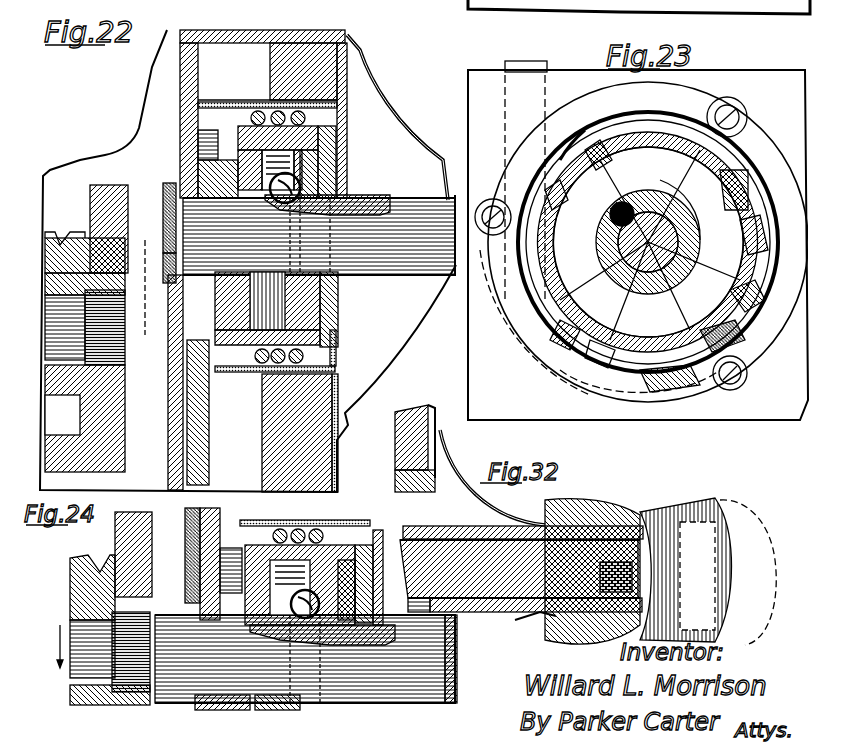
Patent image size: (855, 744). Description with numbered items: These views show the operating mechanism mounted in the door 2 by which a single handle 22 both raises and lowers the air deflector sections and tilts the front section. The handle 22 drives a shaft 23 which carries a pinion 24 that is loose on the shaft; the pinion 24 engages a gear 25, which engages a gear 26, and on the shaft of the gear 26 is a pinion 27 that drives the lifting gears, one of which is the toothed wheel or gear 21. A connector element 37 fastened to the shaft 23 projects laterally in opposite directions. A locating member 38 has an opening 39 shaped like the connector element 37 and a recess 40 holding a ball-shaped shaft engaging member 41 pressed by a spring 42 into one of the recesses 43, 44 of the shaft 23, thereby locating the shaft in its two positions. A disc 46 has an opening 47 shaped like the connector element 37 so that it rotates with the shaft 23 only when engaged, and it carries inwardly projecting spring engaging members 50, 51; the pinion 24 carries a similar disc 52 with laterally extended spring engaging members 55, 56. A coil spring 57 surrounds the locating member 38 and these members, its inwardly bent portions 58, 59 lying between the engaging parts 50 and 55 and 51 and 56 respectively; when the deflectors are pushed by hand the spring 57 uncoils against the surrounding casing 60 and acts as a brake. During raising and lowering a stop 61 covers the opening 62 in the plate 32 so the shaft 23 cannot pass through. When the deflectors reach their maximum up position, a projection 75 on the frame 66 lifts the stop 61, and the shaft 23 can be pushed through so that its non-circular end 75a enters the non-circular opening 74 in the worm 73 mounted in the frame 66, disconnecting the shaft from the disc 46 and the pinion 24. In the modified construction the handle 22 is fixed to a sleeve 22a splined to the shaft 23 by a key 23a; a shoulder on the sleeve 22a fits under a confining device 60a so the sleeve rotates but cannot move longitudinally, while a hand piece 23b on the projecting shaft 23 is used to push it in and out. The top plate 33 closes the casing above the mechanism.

In FIG. 22, the door 2 is at (337, 463).
In FIG. 22, the toothed wheel or gear 21 is at (217, 6).
In FIG. 23, the handle 22 is at (500, 116).
In FIG. 32, the handle 22 is at (572, 512).
In FIG. 32, the sleeve 22a is at (518, 526).
In FIG. 22, the shaft 23 is at (225, 74).
In FIG. 23, the shaft 23 is at (648, 242).
In FIG. 24, the shaft 23 is at (443, 635).
In FIG. 32, the shaft 23 is at (470, 611).
In FIG. 32, the spline or key 23a is at (483, 540).
In FIG. 32, the hand piece 23b is at (728, 578).
In FIG. 22, the pinion 24 is at (205, 170).
In FIG. 23, the pinion 24 is at (755, 165).
In FIG. 24, the pinion 24 is at (262, 512).
In FIG. 22, the gear 25 is at (208, 459).
In FIG. 23, the gear 25 is at (700, 400).
In FIG. 24, the gear 26 is at (465, 672).
In FIG. 22, the pinion 27 is at (450, 212).
In FIG. 22, the plate 32 is at (182, 118).
In FIG. 23, the plate 32 is at (772, 92).
In FIG. 24, the plate 32 is at (200, 700).
In FIG. 22, the top plate 33 is at (232, 31).
In FIG. 32, the top plate 33 is at (408, 437).
In FIG. 22, the connector element 37 is at (338, 233).
In FIG. 24, the connector element 37 is at (300, 652).
In FIG. 22, the locating member 38 is at (340, 318).
In FIG. 23, the locating member 38 is at (672, 148).
In FIG. 24, the locating member 38 is at (380, 530).
In FIG. 23, the opening 39 is at (585, 352).
In FIG. 22, the recess 40 is at (346, 161).
In FIG. 23, the recess 40 is at (556, 332).
In FIG. 24, the recess 40 is at (372, 599).
In FIG. 22, the shaft engaging member 41 is at (279, 206).
In FIG. 23, the shaft engaging member 41 is at (630, 210).
In FIG. 24, the shaft engaging member 41 is at (327, 624).
In FIG. 23, the spring 42 is at (548, 185).
In FIG. 24, the spring 42 is at (325, 545).
In FIG. 22, the recess 43 is at (241, 221).
In FIG. 23, the recess 43 is at (648, 242).
In FIG. 24, the recess 43 is at (306, 659).
In FIG. 22, the recess 44 is at (332, 195).
In FIG. 24, the recess 44 is at (324, 637).
In FIG. 22, the disc 46 is at (340, 139).
In FIG. 24, the disc 46 is at (378, 560).
In FIG. 22, the opening 47 is at (330, 292).
In FIG. 23, the spring engaging member 50 is at (640, 130).
In FIG. 23, the spring engaging member 51 is at (768, 200).
In FIG. 22, the disc 52 is at (196, 141).
In FIG. 23, the disc 52 is at (520, 300).
In FIG. 24, the disc 52 is at (200, 585).
In FIG. 22, the spring engaging member 55 is at (318, 130).
In FIG. 23, the spring engaging member 55 is at (570, 150).
In FIG. 24, the spring engaging member 55 is at (355, 548).
In FIG. 22, the spring engaging member 56 is at (336, 348).
In FIG. 23, the spring engaging member 56 is at (752, 280).
In FIG. 22, the coil spring 57 is at (252, 118).
In FIG. 23, the coil spring 57 is at (585, 385).
In FIG. 24, the coil spring 57 is at (286, 530).
In FIG. 23, the bent portion 58 is at (598, 140).
In FIG. 23, the bent portion 59 is at (762, 240).
In FIG. 22, the casing 60 is at (300, 394).
In FIG. 23, the casing 60 is at (748, 120).
In FIG. 32, the confining device 60a is at (448, 448).
In FIG. 22, the stop 61 is at (162, 208).
In FIG. 24, the stop 61 is at (186, 556).
In FIG. 22, the opening 62 is at (164, 365).
In FIG. 22, the frame 66 is at (106, 192).
In FIG. 23, the frame 66 is at (510, 110).
In FIG. 24, the frame 66 is at (152, 522).
In FIG. 22, the worm 73 is at (62, 240).
In FIG. 24, the worm 73 is at (88, 565).
In FIG. 22, the non-circular opening 74 is at (125, 358).
In FIG. 24, the non-circular opening 74 is at (115, 671).
In FIG. 22, the projection 75 is at (164, 218).
In FIG. 24, the non-circular end 75a is at (172, 698).